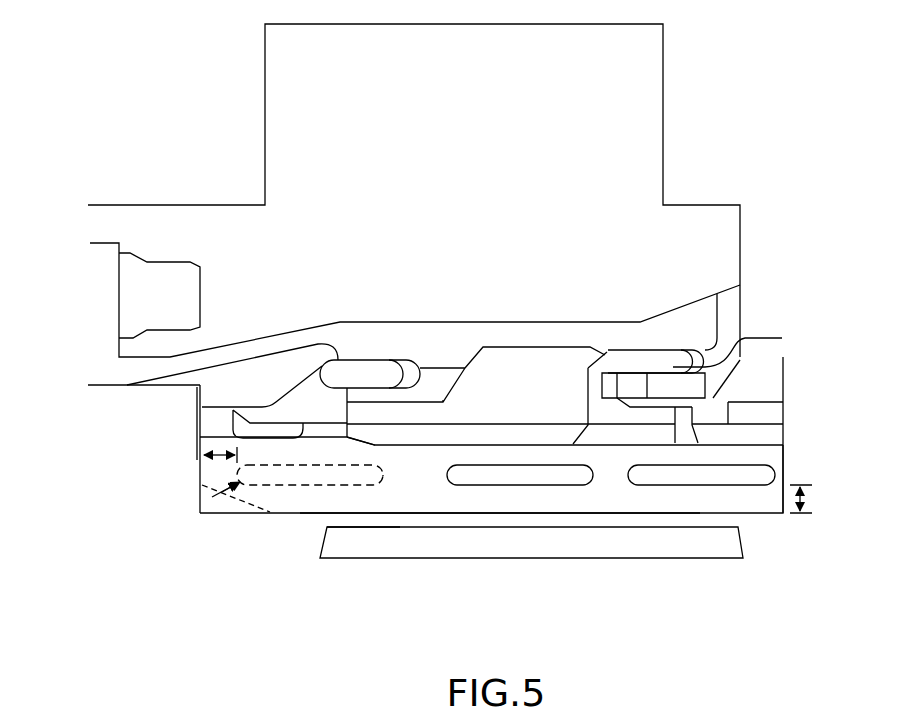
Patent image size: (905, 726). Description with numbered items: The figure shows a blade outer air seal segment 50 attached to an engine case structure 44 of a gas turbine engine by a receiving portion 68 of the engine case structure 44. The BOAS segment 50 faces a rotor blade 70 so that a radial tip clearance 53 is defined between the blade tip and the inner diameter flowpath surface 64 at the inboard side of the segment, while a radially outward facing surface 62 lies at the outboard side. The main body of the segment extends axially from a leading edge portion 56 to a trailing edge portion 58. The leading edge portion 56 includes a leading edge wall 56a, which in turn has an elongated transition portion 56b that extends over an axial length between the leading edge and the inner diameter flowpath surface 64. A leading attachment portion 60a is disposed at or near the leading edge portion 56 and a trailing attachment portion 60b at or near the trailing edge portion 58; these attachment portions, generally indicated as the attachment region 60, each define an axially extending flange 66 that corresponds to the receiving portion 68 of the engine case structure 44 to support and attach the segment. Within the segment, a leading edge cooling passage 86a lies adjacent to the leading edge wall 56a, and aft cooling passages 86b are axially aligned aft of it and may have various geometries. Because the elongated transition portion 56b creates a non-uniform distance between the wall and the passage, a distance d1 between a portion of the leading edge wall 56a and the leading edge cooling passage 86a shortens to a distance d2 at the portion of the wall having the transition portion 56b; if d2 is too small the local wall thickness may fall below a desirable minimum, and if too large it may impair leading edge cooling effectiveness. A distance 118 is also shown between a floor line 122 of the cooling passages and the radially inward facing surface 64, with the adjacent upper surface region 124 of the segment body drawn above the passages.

The engine case structure 44 is at (520, 337).
The blade outer air seal segment 50 is at (775, 455).
The radial tip clearance 53 is at (327, 523).
The leading edge portion 56 is at (190, 472).
The leading edge wall 56a is at (195, 484).
The elongated transition portion 56b is at (245, 495).
The trailing edge portion 58 is at (793, 468).
The wall 60 is at (339, 385).
The leading attachment portion 60a is at (362, 375).
The trailing attachment portion 60b is at (640, 358).
The radially outward facing surface 62 is at (482, 455).
The inner diameter flowpath surface 64 is at (505, 514).
The flange 66 is at (380, 373).
The receiving portion 68 is at (443, 366).
The rotor blade 70 is at (742, 536).
The leading edge cooling passage 86a is at (347, 487).
The aft cooling passage 86b is at (660, 486).
The distance 118 is at (812, 500).
The floor line 122 is at (418, 487).
The top surface 124 is at (415, 462).
The distance d1 is at (203, 455).
The distance d2 is at (238, 498).